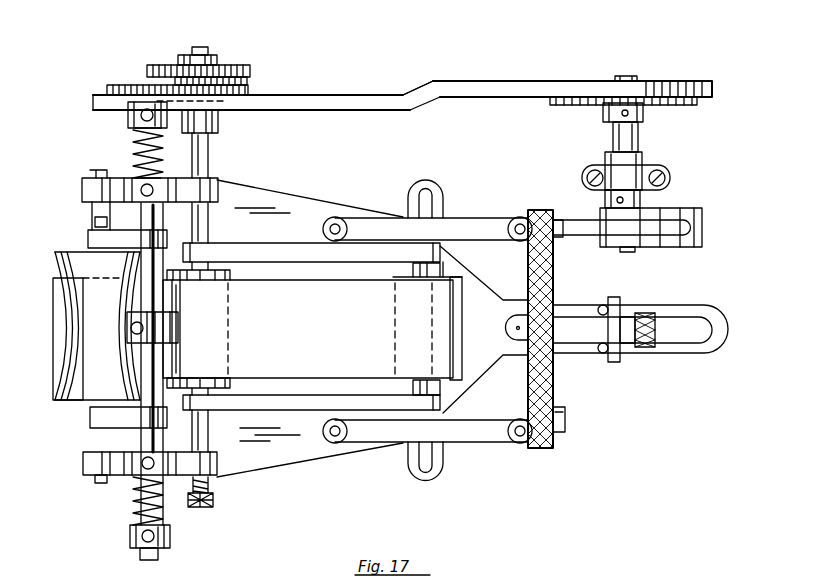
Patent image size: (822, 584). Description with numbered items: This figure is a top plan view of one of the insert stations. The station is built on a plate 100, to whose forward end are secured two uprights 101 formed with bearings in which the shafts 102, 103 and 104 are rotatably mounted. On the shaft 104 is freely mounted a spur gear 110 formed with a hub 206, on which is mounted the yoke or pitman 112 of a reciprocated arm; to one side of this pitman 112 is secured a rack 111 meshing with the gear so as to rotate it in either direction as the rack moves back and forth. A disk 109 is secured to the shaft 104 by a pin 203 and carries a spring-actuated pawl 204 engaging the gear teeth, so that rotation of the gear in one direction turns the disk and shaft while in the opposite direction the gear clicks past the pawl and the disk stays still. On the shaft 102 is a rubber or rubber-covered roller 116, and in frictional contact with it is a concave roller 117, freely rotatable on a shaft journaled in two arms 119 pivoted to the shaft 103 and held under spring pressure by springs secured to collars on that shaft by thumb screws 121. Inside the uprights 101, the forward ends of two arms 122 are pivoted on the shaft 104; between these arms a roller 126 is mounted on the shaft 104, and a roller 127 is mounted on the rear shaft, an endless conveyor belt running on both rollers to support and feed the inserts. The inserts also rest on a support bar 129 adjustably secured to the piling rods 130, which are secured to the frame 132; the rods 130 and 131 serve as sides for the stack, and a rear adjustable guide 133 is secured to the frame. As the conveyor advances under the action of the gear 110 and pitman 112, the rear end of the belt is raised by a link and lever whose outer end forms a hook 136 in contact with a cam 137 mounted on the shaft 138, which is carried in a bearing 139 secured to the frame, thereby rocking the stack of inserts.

The plate 100 is at (690, 350).
The uprights 101 is at (82, 192).
The shaft 102 is at (97, 484).
The shaft 103 is at (140, 556).
The shaft 104 is at (199, 47).
The disk 109 is at (248, 68).
The gear 110 is at (176, 64).
The rack 111 is at (121, 95).
The pitman 112 is at (379, 96).
The roller 116 is at (60, 330).
The concave roller 117 is at (75, 292).
The arms 119 is at (88, 238).
The thumb screws 121 is at (128, 117).
The arms 122 is at (302, 403).
The roller 126 is at (232, 278).
The roller 127 is at (440, 253).
The support bar 129 is at (555, 440).
The piling rods 130 is at (522, 213).
The piling rods 131 is at (350, 214).
The frame 132 is at (462, 223).
The rear adjustable guide 133 is at (603, 354).
The hook 136 is at (657, 227).
The cam 137 is at (702, 212).
The shaft 138 is at (638, 136).
The bearing 139 is at (660, 176).
The pin 203 is at (212, 56).
The pawl 204 is at (248, 78).
The hub 206 is at (220, 118).